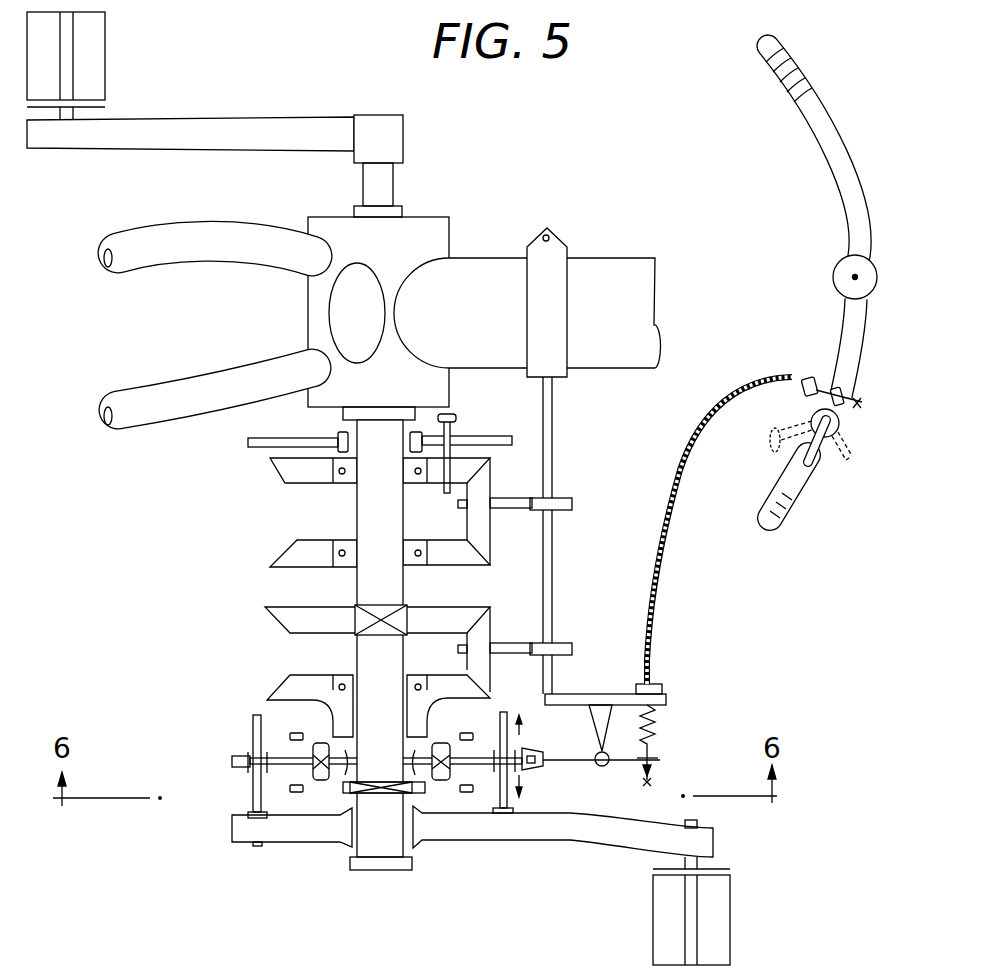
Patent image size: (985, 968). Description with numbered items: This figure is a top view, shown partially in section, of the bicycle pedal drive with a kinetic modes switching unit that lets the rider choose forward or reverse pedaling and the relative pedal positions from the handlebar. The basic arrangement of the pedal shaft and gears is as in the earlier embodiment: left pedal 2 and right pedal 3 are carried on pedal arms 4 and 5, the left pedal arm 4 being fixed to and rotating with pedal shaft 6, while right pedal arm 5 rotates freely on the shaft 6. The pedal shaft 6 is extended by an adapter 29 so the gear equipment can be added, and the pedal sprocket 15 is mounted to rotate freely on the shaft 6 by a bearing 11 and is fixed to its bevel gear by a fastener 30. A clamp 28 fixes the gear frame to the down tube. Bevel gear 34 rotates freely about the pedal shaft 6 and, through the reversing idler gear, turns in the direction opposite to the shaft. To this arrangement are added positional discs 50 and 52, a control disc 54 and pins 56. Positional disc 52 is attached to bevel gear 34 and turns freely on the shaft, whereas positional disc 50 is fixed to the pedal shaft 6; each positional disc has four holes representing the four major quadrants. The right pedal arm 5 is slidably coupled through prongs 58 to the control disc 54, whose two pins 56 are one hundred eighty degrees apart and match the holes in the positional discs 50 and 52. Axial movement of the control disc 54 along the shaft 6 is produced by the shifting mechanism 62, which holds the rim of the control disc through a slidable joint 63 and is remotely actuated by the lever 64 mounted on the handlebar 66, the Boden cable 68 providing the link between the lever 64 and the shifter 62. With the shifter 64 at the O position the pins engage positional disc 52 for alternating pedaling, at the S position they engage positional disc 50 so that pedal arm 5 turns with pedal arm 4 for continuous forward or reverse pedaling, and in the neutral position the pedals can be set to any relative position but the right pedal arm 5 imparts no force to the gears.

The left pedal 2 is at (105, 38).
The right pedal 3 is at (730, 893).
The left pedal arm 4 is at (258, 120).
The right pedal arm 5 is at (580, 842).
The pedal shaft 6 is at (393, 184).
The bearing 11 is at (336, 450).
The pedal sprocket 15 is at (252, 448).
The clamp 28 is at (569, 236).
The adapter 29 is at (357, 506).
The fastener 30 is at (452, 418).
The bevel gear 34 is at (270, 686).
The positional disc 50 is at (293, 793).
The positional disc 52 is at (290, 734).
The control disc 54 is at (232, 762).
The pins 56 is at (320, 782).
The prongs 58 is at (248, 790).
The shifting mechanism 62 is at (672, 724).
The slidable joint 63 is at (556, 774).
The lever 64 is at (850, 444).
The handlebar 66 is at (828, 118).
The Boden cable 68 is at (662, 548).